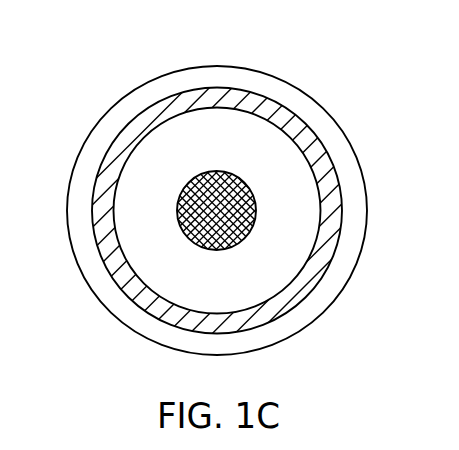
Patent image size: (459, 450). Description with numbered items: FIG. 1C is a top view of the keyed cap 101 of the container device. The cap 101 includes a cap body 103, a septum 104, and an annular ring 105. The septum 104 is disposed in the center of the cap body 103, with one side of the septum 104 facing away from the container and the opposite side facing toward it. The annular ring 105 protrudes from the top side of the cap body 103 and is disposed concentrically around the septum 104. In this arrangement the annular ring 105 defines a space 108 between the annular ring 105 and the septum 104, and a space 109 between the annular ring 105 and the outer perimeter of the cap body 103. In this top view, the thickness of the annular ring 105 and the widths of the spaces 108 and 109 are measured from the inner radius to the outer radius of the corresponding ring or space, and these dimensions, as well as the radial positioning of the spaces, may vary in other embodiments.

The cap 101 is at (113, 60).
The cap body 103 is at (364, 190).
The septum 104 is at (207, 172).
The annular ring 105 is at (309, 130).
The space 108 is at (132, 203).
The space 109 is at (85, 245).